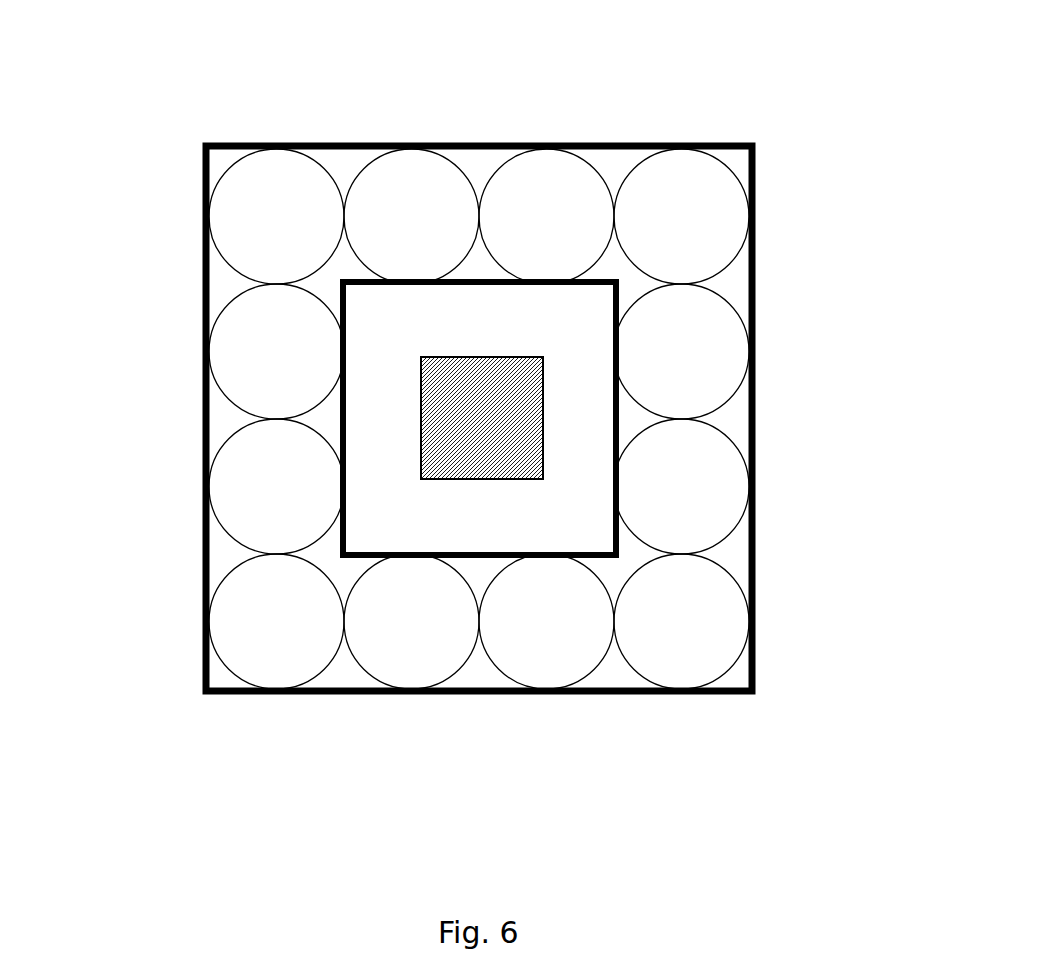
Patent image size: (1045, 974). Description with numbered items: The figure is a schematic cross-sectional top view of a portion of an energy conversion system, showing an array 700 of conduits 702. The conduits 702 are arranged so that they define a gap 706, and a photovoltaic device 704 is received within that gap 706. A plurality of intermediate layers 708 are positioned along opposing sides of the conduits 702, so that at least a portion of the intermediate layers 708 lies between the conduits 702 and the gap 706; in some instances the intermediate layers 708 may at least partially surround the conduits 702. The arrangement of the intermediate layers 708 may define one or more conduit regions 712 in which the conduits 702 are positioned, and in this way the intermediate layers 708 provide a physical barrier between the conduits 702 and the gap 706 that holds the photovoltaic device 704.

The array 700 is at (163, 97).
The conduits 702 is at (478, 105).
The photovoltaic device 704 is at (523, 438).
The gap 706 is at (578, 326).
The intermediate layers 708 is at (393, 419).
The conduit regions 712 is at (338, 255).